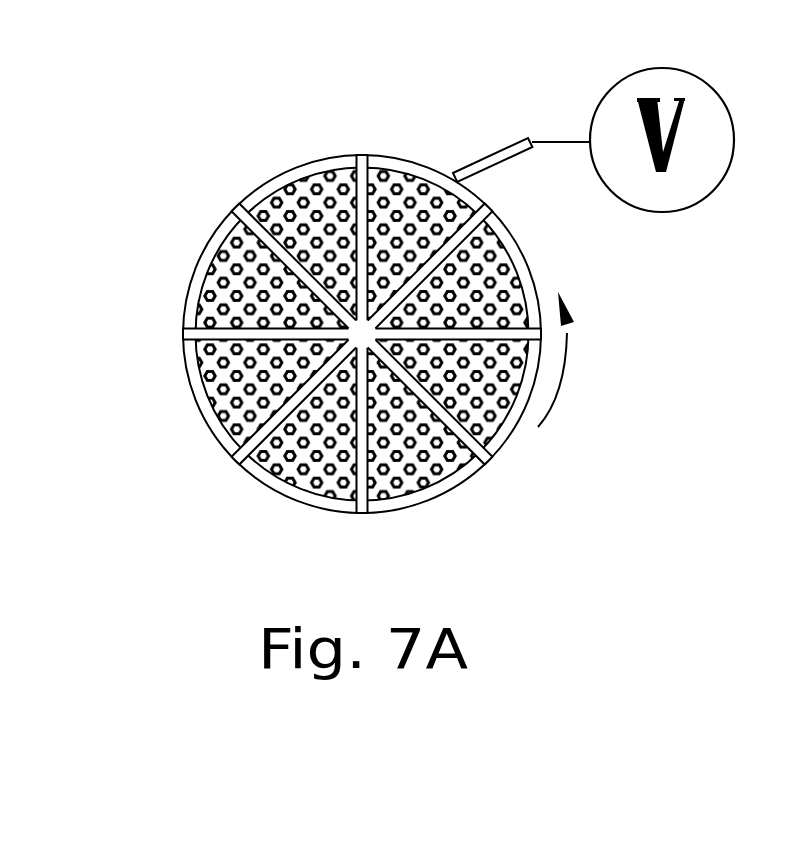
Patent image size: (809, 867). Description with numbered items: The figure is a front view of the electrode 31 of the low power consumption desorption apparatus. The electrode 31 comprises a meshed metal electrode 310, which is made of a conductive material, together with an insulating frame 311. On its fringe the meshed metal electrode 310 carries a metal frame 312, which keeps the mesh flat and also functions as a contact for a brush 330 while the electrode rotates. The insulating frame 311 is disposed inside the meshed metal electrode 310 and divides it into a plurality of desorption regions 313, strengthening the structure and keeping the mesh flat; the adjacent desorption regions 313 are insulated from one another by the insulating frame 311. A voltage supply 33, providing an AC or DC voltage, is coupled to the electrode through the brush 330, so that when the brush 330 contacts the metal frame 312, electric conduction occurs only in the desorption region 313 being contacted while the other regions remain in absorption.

The electrode 31 is at (331, 294).
The meshed metal electrode 310 is at (215, 258).
The insulating frame 311 is at (362, 165).
The metal frame 312 is at (525, 272).
The desorption regions 313 is at (490, 186).
The brush 330 is at (487, 156).
The voltage supply 33 is at (690, 70).